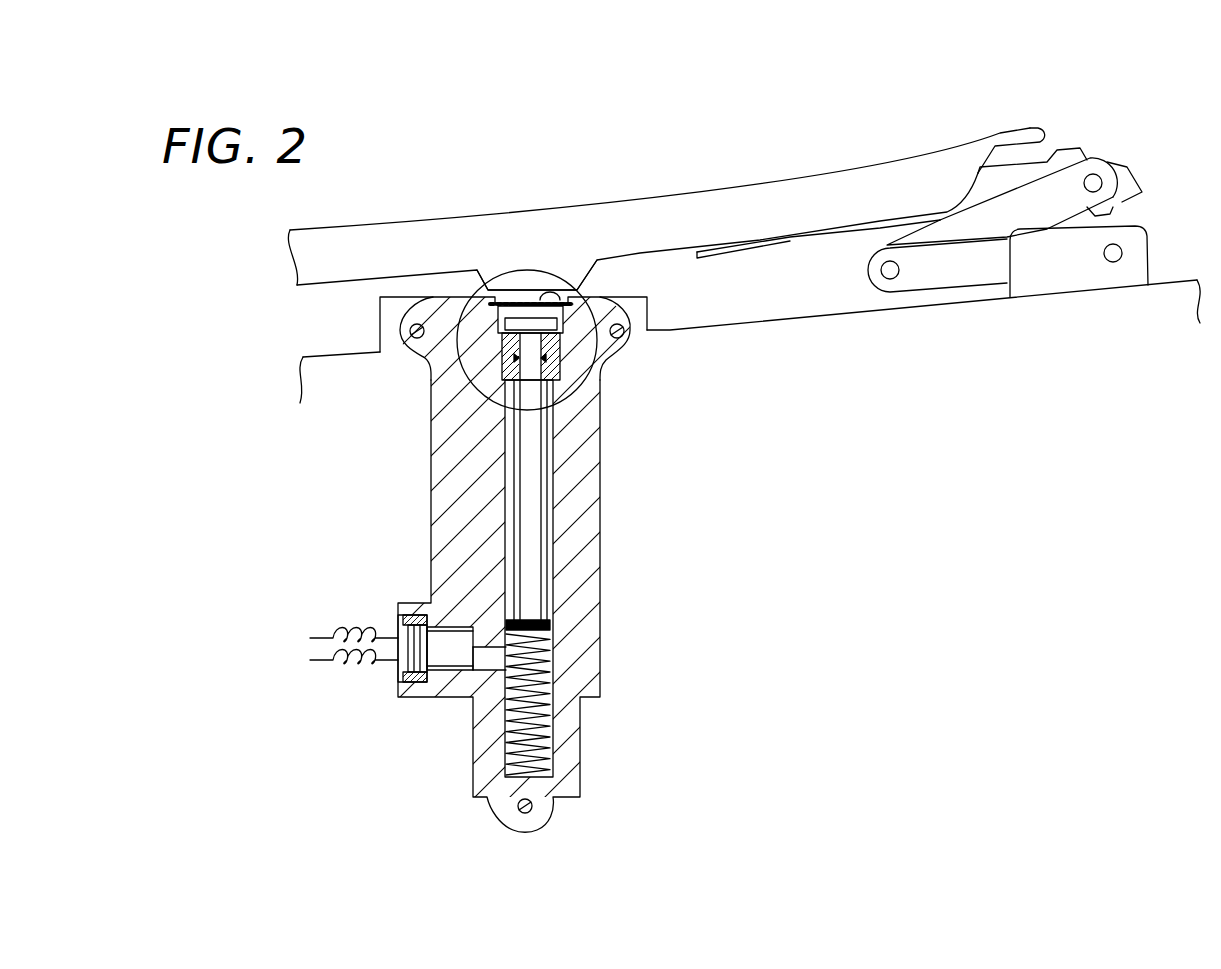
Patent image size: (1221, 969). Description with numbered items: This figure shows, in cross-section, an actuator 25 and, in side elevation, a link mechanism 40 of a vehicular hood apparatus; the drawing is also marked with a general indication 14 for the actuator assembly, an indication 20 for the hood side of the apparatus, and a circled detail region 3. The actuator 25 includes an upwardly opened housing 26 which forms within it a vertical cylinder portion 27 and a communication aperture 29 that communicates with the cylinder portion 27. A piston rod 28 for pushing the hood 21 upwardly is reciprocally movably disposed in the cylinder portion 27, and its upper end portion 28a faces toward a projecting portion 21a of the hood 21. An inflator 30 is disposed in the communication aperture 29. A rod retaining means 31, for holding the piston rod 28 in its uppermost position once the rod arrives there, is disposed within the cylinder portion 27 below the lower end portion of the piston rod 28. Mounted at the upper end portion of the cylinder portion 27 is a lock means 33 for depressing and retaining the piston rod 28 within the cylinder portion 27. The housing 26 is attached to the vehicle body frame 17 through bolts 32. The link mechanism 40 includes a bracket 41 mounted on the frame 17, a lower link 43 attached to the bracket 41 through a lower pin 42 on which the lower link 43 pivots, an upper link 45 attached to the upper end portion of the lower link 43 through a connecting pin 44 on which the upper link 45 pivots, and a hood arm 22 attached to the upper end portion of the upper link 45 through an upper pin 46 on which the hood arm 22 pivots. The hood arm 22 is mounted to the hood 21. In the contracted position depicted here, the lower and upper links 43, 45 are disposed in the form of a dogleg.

The detail circle for FIG. 3 is at (482, 290).
The switch unit 14 is at (583, 489).
The vehicle body frame 17 is at (753, 323).
The operating member assembly 20 is at (713, 166).
The hood 21 is at (659, 187).
The projecting portion 21a is at (562, 298).
The hood arm 22 is at (1047, 163).
The actuator 25 is at (583, 556).
The housing 26 is at (602, 470).
The cylinder portion 27 is at (553, 563).
The piston rod 28 is at (402, 360).
The upper end portion 28a is at (497, 310).
The communication aperture 29 is at (487, 642).
The inflator 30 is at (440, 671).
The rod retaining means 31 is at (503, 743).
The bolts 32 is at (410, 338).
The lock means 33 is at (513, 302).
The link mechanism 40 is at (952, 141).
The bracket 41 is at (1106, 317).
The lower pin 42 is at (1113, 262).
The lower link 43 is at (948, 324).
The connecting pin 44 is at (890, 279).
The upper link 45 is at (972, 186).
The upper pin 46 is at (1102, 178).